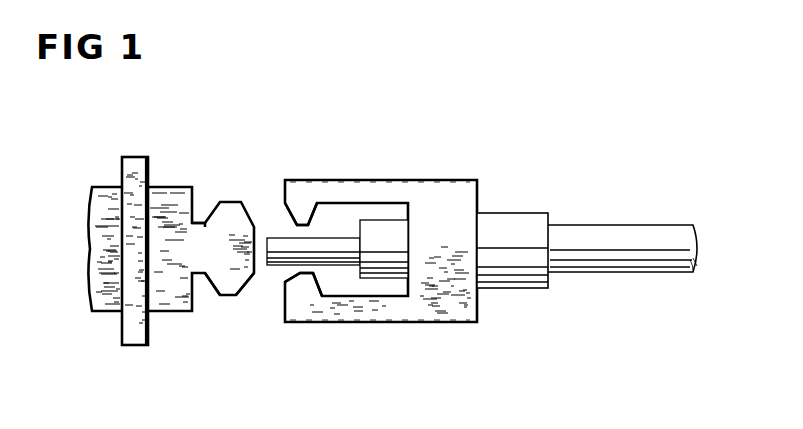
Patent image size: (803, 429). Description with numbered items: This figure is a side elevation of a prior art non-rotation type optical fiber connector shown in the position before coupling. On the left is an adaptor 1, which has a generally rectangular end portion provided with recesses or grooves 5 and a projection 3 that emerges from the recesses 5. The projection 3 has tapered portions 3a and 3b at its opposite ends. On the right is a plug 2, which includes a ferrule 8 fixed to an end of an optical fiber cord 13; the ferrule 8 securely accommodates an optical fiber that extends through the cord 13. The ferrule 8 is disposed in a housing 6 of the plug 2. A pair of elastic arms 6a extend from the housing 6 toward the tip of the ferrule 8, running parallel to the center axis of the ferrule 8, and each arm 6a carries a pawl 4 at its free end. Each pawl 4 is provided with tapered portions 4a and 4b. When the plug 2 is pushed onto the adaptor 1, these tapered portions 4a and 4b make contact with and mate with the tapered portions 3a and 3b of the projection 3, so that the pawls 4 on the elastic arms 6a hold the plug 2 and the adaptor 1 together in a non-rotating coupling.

The adaptor 1 is at (132, 158).
The plug 2 is at (400, 164).
The projection 3 is at (229, 200).
The tapered portion 3a is at (248, 294).
The tapered portion 3b is at (211, 294).
The pawl 4 is at (293, 197).
The tapered portion 4a is at (289, 283).
The tapered portion 4b is at (315, 280).
The recesses 5 is at (204, 221).
The housing 6 is at (437, 179).
The elastic arms 6a is at (348, 190).
The ferrule 8 is at (277, 236).
The optical fiber cord 13 is at (603, 238).